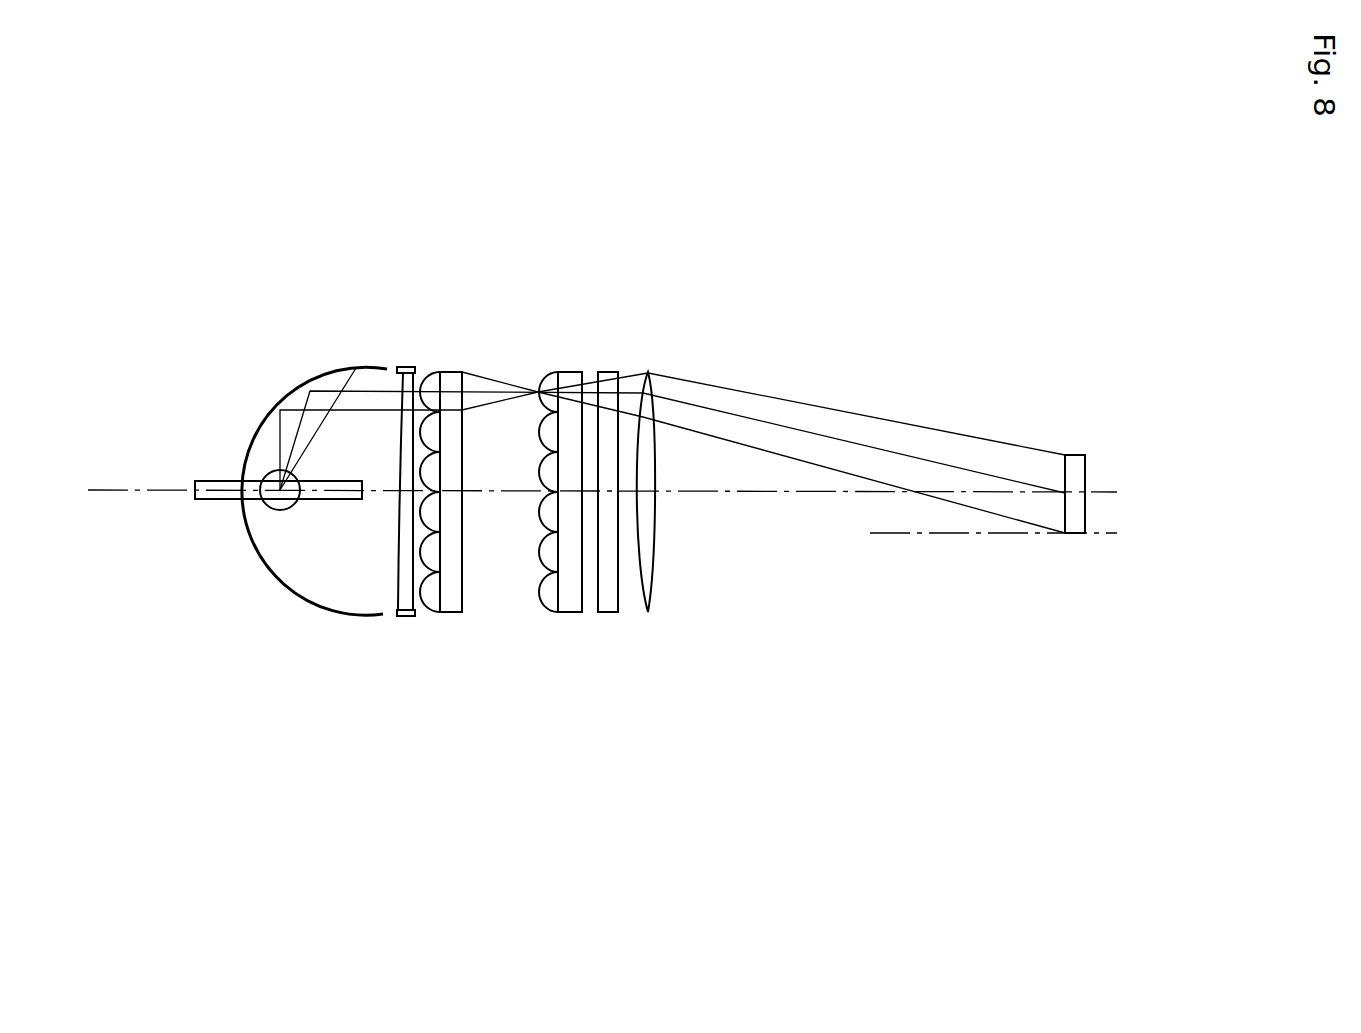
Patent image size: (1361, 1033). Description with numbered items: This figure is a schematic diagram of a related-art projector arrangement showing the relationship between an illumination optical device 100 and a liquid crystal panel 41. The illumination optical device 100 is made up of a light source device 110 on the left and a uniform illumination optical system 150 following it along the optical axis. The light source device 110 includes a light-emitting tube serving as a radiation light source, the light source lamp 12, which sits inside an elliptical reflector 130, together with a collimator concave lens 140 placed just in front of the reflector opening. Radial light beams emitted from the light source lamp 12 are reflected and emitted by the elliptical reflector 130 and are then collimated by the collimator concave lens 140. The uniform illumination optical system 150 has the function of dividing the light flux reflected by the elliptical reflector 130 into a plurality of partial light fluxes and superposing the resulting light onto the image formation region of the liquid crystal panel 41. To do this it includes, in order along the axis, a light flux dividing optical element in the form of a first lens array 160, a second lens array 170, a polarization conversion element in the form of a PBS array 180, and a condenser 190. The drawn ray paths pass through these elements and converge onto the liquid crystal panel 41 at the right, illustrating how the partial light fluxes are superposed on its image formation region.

The illumination optical device 100 is at (626, 236).
The light source device 110 is at (437, 688).
The light source lamp 12 is at (333, 500).
The elliptical reflector 130 is at (345, 612).
The collimator concave lens 140 is at (400, 614).
The uniform illumination optical system 150 is at (693, 688).
The first lens array 160 is at (450, 613).
The second lens array 170 is at (570, 613).
The PBS array 180 is at (608, 613).
The condenser 190 is at (648, 612).
The liquid crystal panel 41 is at (1085, 457).